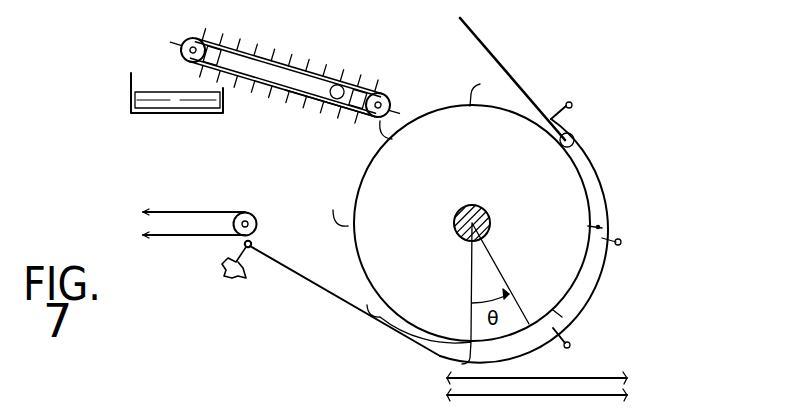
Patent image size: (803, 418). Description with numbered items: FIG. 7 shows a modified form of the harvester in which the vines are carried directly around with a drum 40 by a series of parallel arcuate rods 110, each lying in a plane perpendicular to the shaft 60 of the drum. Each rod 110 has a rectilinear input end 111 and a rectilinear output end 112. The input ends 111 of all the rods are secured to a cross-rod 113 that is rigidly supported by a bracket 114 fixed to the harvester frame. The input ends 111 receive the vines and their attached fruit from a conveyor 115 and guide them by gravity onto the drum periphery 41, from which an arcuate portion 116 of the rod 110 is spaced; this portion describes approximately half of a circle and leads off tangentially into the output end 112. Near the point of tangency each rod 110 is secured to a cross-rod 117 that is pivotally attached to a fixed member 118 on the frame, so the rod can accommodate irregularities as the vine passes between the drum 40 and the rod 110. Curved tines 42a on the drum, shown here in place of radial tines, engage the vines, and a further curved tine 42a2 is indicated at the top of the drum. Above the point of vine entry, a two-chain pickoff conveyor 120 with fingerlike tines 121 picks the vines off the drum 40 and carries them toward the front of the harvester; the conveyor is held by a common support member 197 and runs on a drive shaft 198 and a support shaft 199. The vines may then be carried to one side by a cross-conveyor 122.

The drum 40 is at (577, 258).
The drum periphery 41 is at (583, 184).
The curved tines 42a is at (574, 138).
The gripper finger 42a2 is at (482, 84).
The shaft 60 is at (488, 216).
The arcuate rod 110 is at (590, 284).
The rectilinear input end 111 is at (322, 296).
The rectilinear output end 112 is at (491, 50).
The cross-rod 113 is at (244, 245).
The bracket 114 is at (222, 273).
The conveyor 115 is at (210, 212).
The arcuate portion 116 is at (524, 347).
The cross-rod 117 is at (553, 115).
The fixed member 118 is at (572, 105).
The two-chain conveyor 120 is at (271, 56).
The tines 121 is at (355, 82).
The cross-conveyor 122 is at (130, 101).
The common support member 197 is at (330, 102).
The drive shaft 198 is at (189, 39).
The support shaft 199 is at (404, 68).